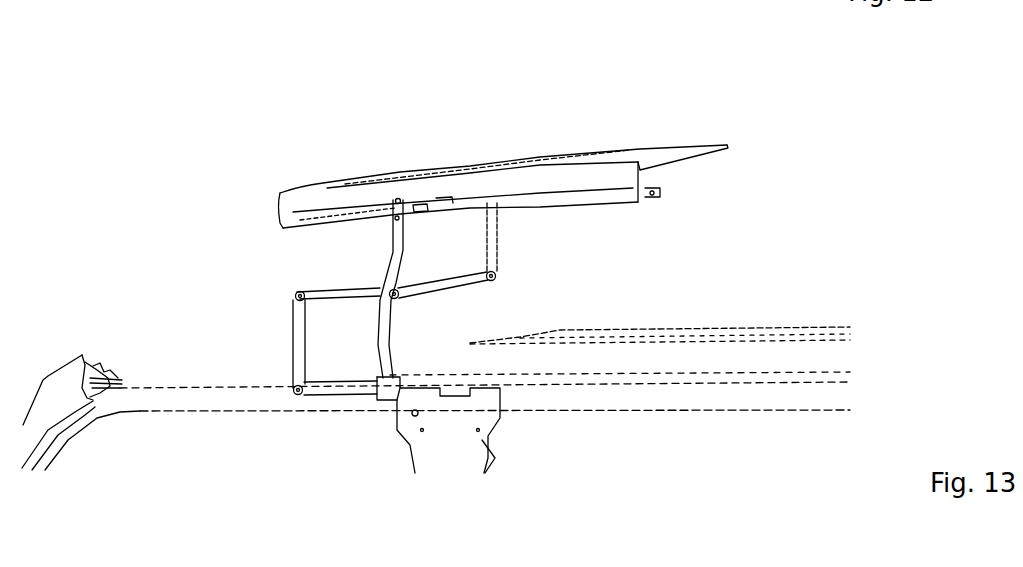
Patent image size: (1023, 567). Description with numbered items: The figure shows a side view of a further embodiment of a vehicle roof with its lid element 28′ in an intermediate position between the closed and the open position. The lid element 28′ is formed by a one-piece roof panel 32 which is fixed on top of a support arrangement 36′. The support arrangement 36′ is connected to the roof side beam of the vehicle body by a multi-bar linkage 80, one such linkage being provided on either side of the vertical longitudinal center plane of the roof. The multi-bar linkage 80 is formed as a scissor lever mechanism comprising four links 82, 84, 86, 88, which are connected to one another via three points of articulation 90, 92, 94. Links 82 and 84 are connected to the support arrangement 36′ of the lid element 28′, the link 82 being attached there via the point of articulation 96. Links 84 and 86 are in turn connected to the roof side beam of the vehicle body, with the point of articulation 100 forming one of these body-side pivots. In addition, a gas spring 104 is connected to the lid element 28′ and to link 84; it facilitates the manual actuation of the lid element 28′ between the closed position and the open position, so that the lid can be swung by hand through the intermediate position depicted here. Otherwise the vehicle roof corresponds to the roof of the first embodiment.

The lid element 28′ is at (298, 188).
The support arrangement 36′ is at (457, 190).
The roof panel 32 is at (293, 212).
The multi-bar linkage 80 is at (380, 266).
The link 82 is at (493, 238).
The link 84 is at (393, 253).
The link 86 is at (302, 353).
The link 88 is at (467, 283).
The point of articulation 90 is at (299, 300).
The point of articulation 92 is at (399, 290).
The point of articulation 94 is at (496, 275).
The point of articulation 96 is at (397, 200).
The point of articulation 100 is at (358, 390).
The gas spring 104 is at (422, 210).